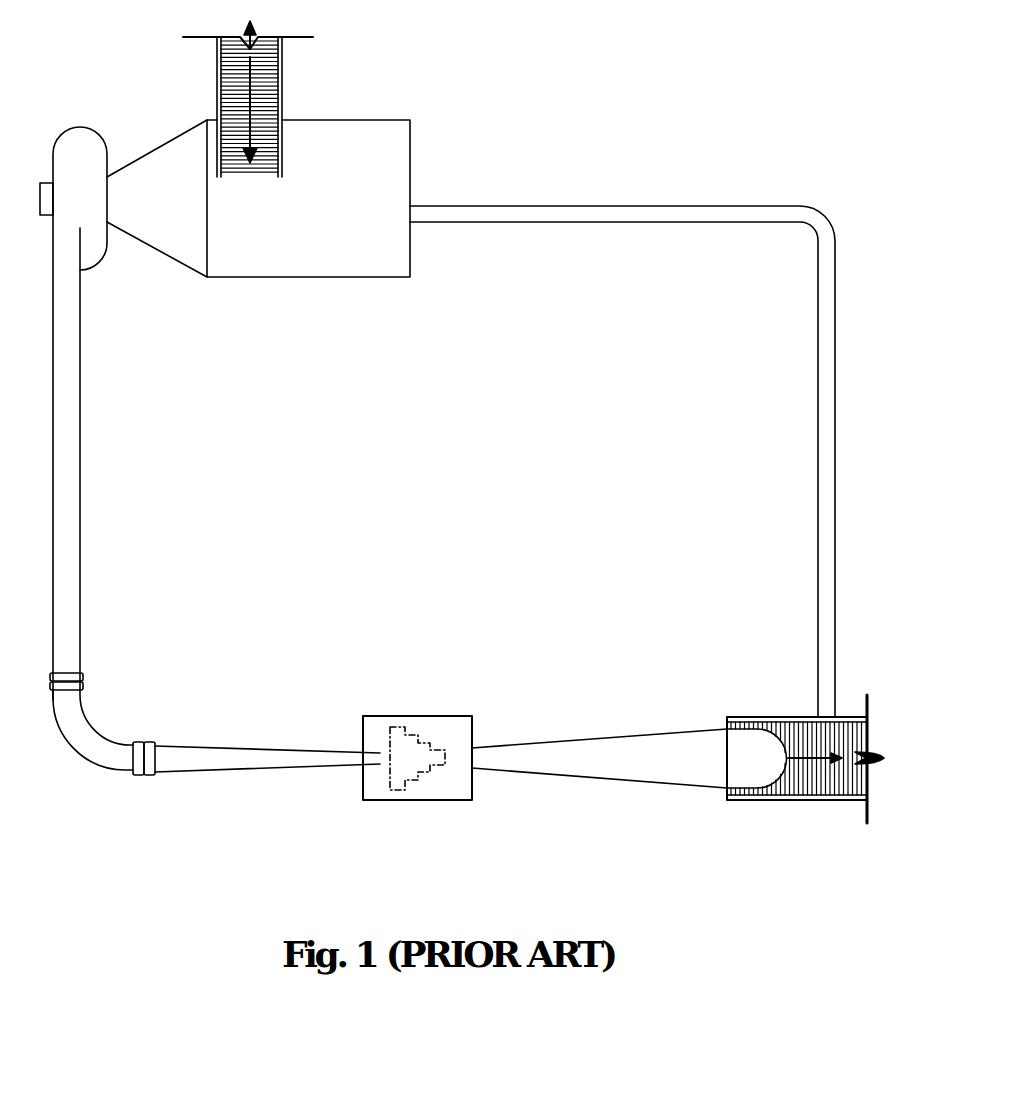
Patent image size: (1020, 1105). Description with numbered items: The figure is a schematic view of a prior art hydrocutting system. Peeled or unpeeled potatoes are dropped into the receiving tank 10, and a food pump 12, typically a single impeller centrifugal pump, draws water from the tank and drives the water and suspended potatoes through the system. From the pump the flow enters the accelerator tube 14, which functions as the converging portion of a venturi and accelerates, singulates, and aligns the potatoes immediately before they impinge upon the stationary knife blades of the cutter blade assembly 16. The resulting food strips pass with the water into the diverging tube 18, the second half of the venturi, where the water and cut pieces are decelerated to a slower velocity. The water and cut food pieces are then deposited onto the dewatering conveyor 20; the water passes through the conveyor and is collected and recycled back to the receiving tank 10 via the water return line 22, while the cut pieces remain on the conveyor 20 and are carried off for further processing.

The receiving tank 10 is at (264, 210).
The food pump 12 is at (95, 252).
The accelerator tube 14 is at (183, 748).
The cutter blade assembly 16 is at (423, 800).
The diverging tube 18 is at (542, 772).
The dewatering conveyor 20 is at (776, 718).
The water return line 22 is at (467, 206).